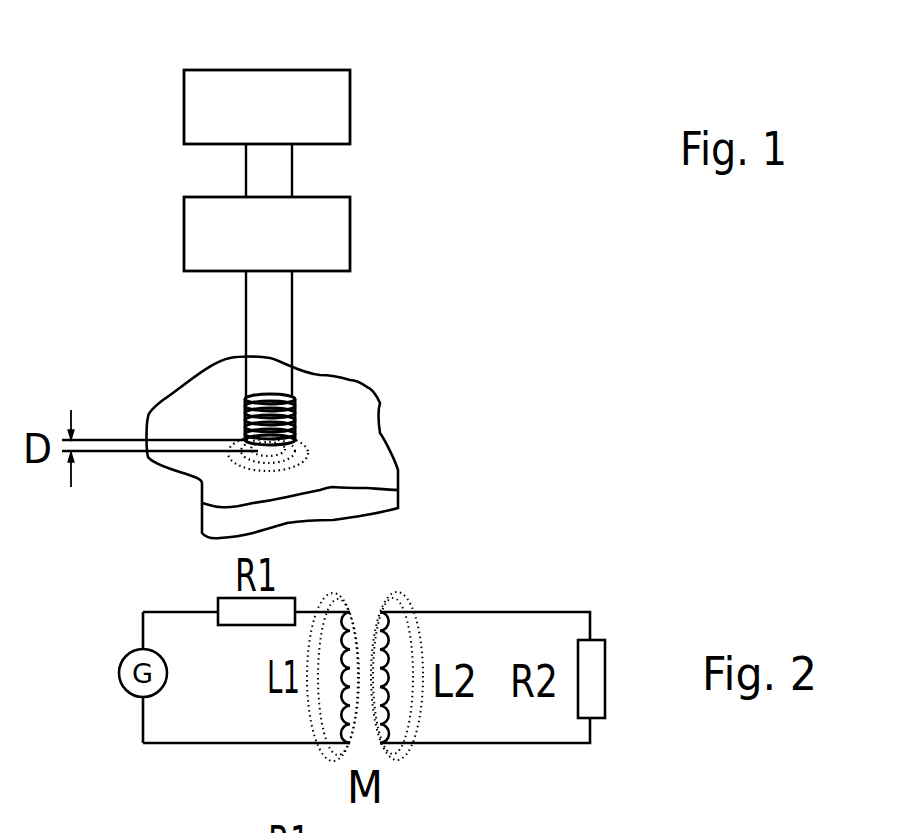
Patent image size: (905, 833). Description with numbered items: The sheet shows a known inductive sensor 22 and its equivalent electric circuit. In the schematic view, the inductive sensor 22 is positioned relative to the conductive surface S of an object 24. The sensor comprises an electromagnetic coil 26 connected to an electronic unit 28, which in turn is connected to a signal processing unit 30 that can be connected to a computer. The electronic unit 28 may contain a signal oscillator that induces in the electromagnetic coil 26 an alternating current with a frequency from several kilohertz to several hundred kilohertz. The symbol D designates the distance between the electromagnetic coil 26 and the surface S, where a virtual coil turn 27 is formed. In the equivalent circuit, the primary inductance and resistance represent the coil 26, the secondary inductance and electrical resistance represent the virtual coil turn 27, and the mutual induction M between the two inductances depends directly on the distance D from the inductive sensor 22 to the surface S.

In FIG. 1, the inductive sensor 22 is at (383, 178).
In FIG. 1, the object 24 is at (390, 492).
In FIG. 1, the electromagnetic coil 26 is at (298, 394).
In FIG. 2, the electromagnetic coil 26 is at (347, 612).
In FIG. 1, the virtual coil turn 27 is at (258, 473).
In FIG. 1, the electronic unit 28 is at (184, 230).
In FIG. 1, the signal processing unit 30 is at (184, 105).